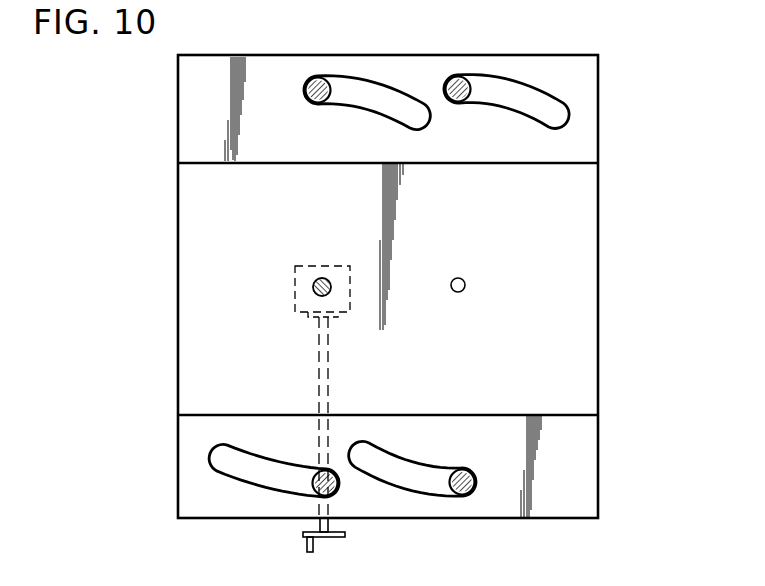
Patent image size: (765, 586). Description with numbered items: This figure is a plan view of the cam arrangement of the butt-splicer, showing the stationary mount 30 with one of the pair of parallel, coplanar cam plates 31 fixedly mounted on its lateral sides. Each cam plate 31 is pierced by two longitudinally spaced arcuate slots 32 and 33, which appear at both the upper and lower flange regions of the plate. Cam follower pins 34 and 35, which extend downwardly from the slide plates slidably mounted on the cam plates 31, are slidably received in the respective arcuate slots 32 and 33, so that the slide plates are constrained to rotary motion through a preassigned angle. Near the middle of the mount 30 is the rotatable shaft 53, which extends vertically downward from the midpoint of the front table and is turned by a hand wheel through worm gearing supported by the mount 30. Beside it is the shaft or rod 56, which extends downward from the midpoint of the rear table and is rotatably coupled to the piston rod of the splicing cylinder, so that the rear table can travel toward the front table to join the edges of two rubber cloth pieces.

The stationary mount 30 is at (200, 276).
The cam plate 31 is at (585, 113).
The arcuate slot 32 is at (380, 93).
The arcuate slot 33 is at (508, 92).
The cam follower pin 34 is at (308, 78).
The cam follower pin 35 is at (453, 78).
The rotatable shaft 53 is at (317, 278).
The shaft or rod 56 is at (466, 283).